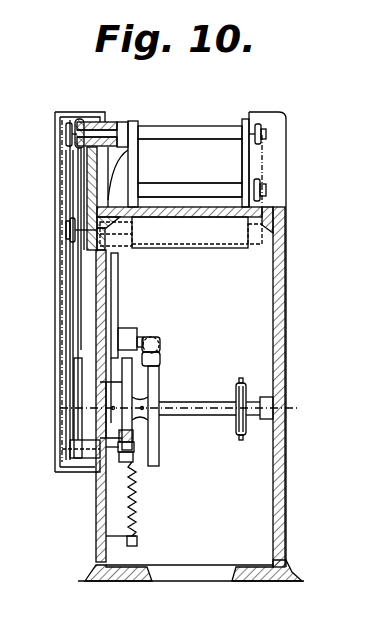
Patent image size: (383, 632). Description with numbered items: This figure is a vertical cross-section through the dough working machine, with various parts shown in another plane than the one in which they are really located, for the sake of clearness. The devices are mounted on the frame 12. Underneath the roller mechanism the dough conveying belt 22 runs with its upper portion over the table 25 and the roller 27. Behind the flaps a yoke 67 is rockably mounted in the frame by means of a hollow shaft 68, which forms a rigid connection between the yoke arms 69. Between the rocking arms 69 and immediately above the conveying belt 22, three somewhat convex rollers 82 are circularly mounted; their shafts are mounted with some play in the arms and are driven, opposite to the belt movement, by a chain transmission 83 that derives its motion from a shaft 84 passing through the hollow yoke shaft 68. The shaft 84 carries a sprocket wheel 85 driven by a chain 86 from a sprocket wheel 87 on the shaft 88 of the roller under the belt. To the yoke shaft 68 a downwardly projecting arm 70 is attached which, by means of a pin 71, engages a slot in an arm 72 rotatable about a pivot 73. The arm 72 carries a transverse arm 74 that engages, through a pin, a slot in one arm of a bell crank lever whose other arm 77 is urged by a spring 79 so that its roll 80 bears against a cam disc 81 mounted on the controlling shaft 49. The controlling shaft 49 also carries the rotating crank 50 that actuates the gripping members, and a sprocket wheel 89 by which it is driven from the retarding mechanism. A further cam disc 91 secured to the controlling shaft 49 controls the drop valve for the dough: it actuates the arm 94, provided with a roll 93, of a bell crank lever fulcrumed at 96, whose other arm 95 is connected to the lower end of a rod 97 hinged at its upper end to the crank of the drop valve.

The frame 12 is at (280, 352).
The dough conveying belt 22 is at (226, 220).
The table 25 is at (190, 218).
The roller 27 is at (208, 222).
The controlling shaft 49 is at (188, 406).
The rotating crank 50 is at (76, 374).
The yoke 67 is at (190, 140).
The shaft 68 is at (172, 128).
The yoke arms 69 is at (138, 160).
The downwardly projecting arm 70 is at (86, 174).
The pin 71 is at (72, 276).
The arm 72 is at (73, 330).
The pivot 73 is at (72, 446).
The transverse arm 74 is at (100, 488).
The bell crank lever arm 77 is at (133, 470).
The spring 79 is at (136, 520).
The roll 80 is at (135, 455).
The cam disc 81 is at (132, 380).
The convex rollers 82 is at (228, 196).
The chain transmission 83 is at (266, 190).
The shaft 84 is at (118, 128).
The sprocket wheel 85 is at (68, 143).
The chain 86 is at (66, 200).
The sprocket wheel 87 is at (66, 240).
The shaft 88 is at (124, 246).
The sprocket wheel 89 is at (242, 382).
The cam disc 91 is at (159, 393).
The roll 93 is at (160, 362).
The arm 94 is at (160, 346).
The arm 95 is at (133, 328).
The fulcrum 96 is at (152, 337).
The rod 97 is at (118, 284).